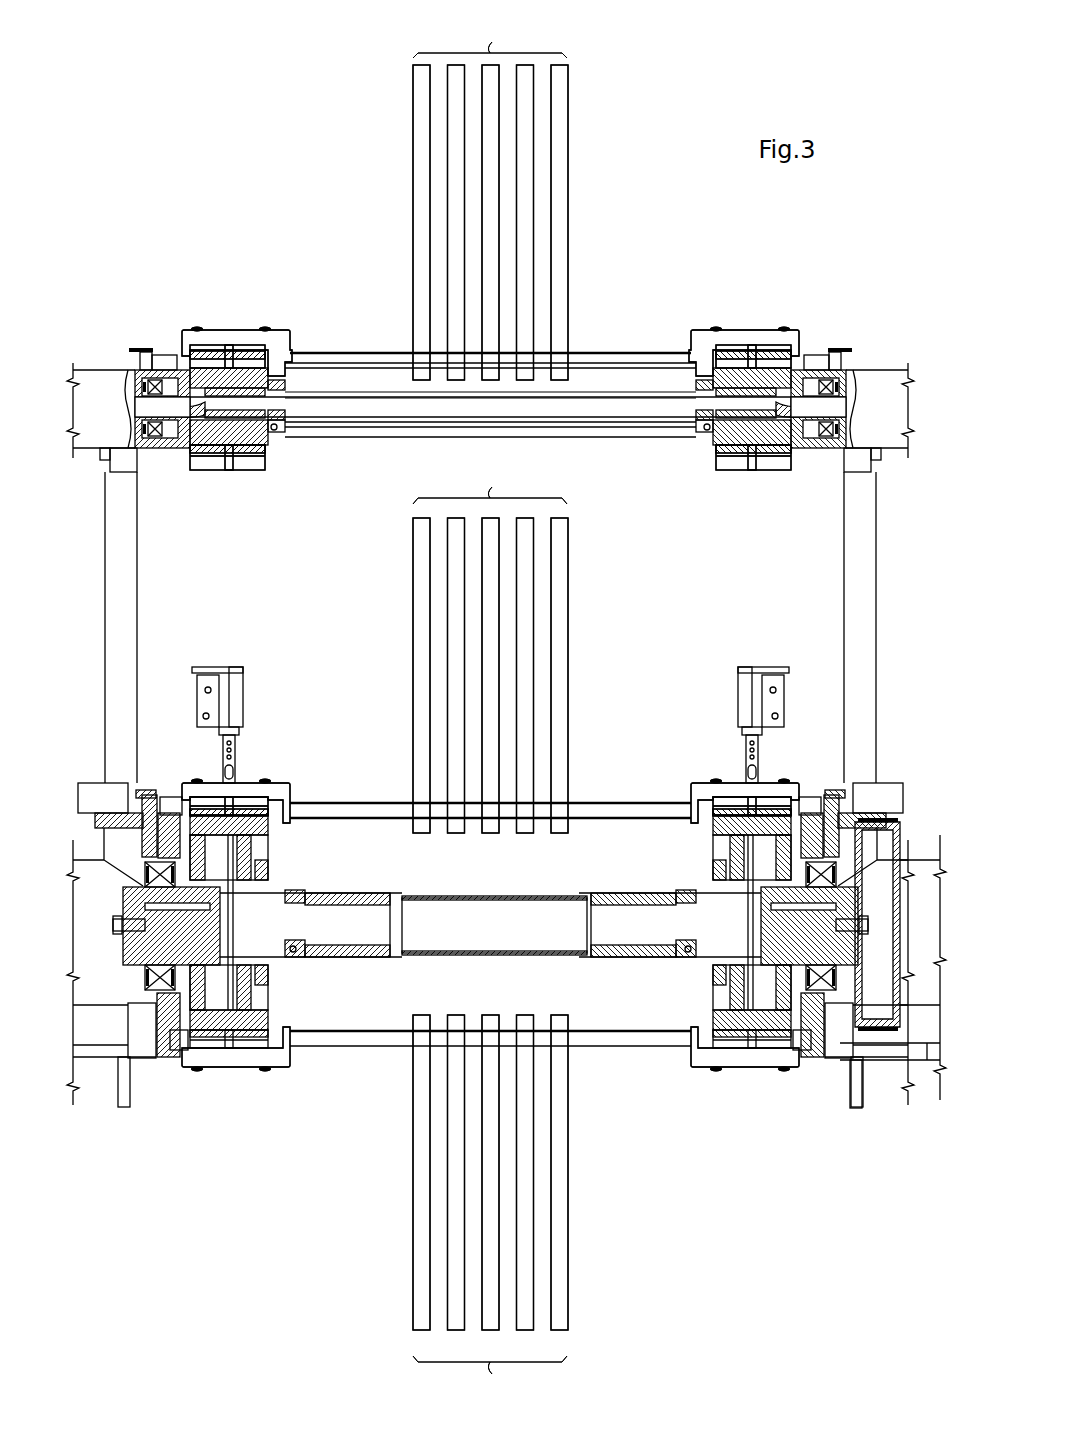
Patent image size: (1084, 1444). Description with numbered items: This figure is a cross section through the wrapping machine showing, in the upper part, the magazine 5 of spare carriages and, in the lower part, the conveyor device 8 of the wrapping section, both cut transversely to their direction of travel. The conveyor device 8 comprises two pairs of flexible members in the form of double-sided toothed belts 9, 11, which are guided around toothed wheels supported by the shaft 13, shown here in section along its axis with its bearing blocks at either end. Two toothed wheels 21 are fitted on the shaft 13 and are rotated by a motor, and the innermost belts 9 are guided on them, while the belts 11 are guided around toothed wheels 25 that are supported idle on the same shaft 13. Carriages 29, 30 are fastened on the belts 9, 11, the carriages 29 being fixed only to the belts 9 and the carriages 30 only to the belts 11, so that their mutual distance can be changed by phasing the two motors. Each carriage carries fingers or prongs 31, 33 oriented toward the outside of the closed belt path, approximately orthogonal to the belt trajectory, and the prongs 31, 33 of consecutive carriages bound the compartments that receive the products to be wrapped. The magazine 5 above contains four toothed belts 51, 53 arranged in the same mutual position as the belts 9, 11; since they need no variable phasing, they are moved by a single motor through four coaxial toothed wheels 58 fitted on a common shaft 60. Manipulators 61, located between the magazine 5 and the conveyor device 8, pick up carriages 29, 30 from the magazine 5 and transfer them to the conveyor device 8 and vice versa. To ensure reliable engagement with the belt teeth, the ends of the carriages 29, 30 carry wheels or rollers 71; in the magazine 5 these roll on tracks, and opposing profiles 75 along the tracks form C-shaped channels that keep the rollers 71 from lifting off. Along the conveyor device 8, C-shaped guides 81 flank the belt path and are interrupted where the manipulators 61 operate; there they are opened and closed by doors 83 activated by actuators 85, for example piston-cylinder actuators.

The magazine 5 is at (318, 266).
The conveyor device 8 is at (592, 731).
The belt 9 is at (262, 800).
The belt 11 is at (210, 797).
The shaft 13 is at (498, 895).
The toothed wheel 21 is at (246, 852).
The toothed wheel 25 is at (245, 1010).
The carriage 29 is at (212, 333).
The carriage 30 is at (490, 669).
The prong 31 is at (490, 709).
The prong 33 is at (490, 695).
The toothed belt 51 is at (255, 471).
The toothed belt 53 is at (205, 471).
The toothed wheel 58 is at (268, 442).
The common shaft 60 is at (371, 417).
The manipulator 61 is at (264, 688).
The wheel or roller 71 is at (176, 352).
The opposing profile 75 is at (148, 347).
The C-shaped guide 81 is at (160, 1040).
The door 83 is at (158, 790).
The actuator 85 is at (88, 800).